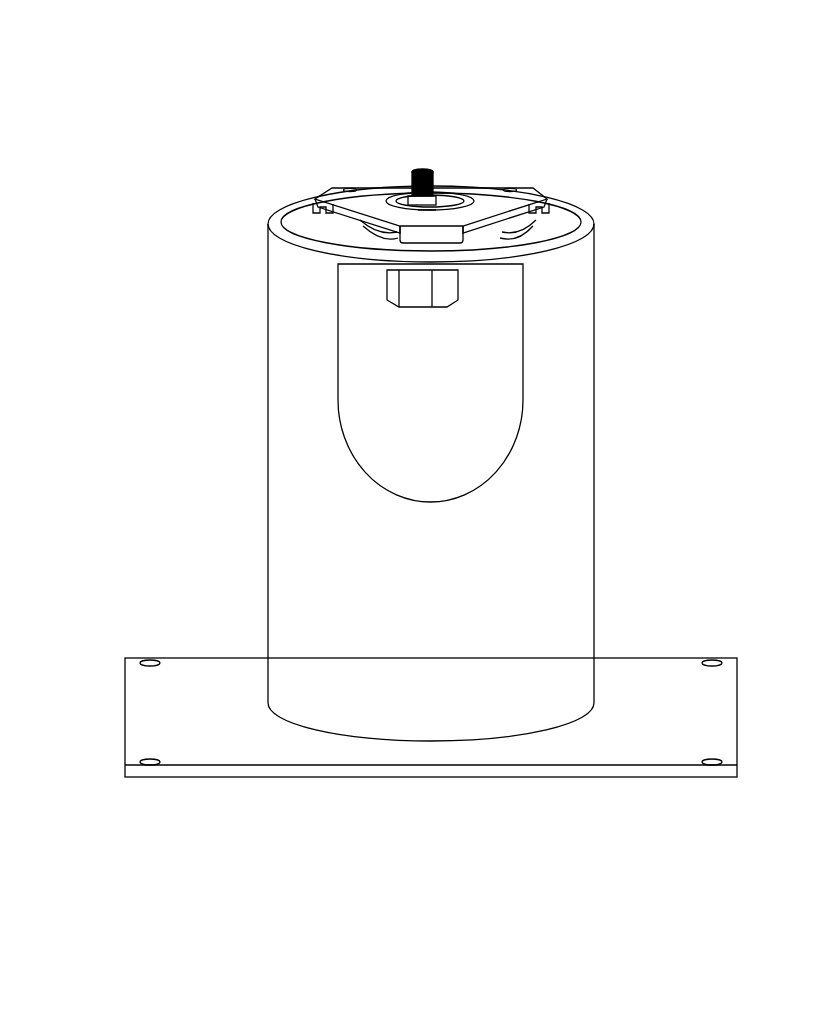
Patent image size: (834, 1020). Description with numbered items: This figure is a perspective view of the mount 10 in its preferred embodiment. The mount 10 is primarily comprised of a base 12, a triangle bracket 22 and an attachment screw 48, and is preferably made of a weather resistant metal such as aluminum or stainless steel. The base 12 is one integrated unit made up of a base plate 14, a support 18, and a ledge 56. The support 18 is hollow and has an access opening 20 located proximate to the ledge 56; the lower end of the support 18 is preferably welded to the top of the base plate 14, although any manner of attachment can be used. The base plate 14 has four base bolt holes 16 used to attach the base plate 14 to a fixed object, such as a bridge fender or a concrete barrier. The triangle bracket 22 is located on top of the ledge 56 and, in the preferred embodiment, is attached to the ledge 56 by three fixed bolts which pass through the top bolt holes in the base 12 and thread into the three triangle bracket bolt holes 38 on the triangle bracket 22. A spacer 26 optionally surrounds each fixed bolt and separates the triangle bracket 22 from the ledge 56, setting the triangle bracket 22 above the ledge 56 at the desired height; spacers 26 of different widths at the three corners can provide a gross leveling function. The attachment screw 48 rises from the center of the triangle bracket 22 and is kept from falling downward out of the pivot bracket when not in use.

The mount 10 is at (418, 473).
The base 12 is at (418, 421).
The base plate 14 is at (418, 664).
The base bolt holes 16 is at (94, 704).
The support 18 is at (442, 431).
The access opening 20 is at (330, 379).
The triangle bracket 22 is at (422, 154).
The spacer 26 is at (343, 192).
The triangle bracket bolt holes 38 is at (247, 129).
The attachment screw 48 is at (594, 267).
The ledge 56 is at (535, 186).